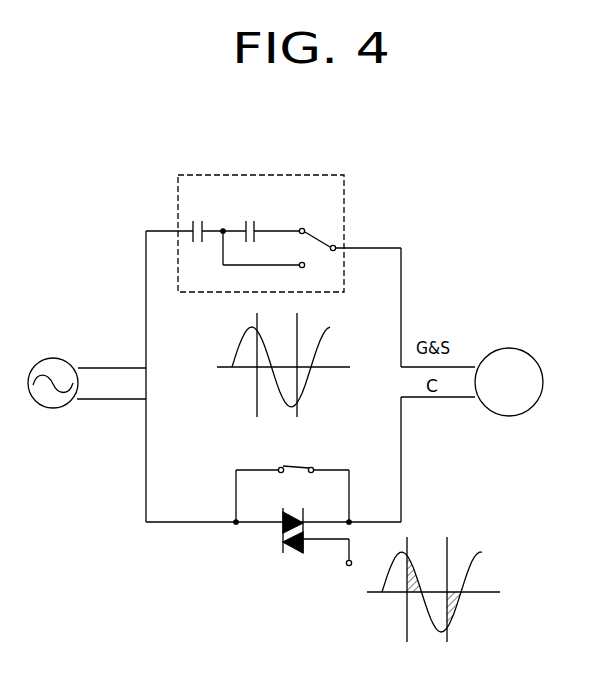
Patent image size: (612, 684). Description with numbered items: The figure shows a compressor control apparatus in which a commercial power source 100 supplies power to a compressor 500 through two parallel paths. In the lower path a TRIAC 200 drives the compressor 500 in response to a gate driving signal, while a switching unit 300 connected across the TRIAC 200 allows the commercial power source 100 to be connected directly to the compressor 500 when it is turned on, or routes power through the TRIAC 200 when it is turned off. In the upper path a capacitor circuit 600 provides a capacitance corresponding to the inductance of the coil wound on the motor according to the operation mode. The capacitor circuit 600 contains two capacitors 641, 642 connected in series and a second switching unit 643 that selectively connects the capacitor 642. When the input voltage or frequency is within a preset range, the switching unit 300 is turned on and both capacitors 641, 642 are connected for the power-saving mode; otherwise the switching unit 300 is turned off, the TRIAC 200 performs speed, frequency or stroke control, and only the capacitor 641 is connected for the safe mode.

The commercial power source 100 is at (52, 358).
The TRIAC 200 is at (283, 540).
The switching unit 300 is at (288, 463).
The compressor 500 is at (508, 348).
The capacitor circuit 600 is at (258, 175).
The capacitor 641 is at (215, 221).
The capacitor 642 is at (267, 221).
The second switching unit 643 is at (312, 236).